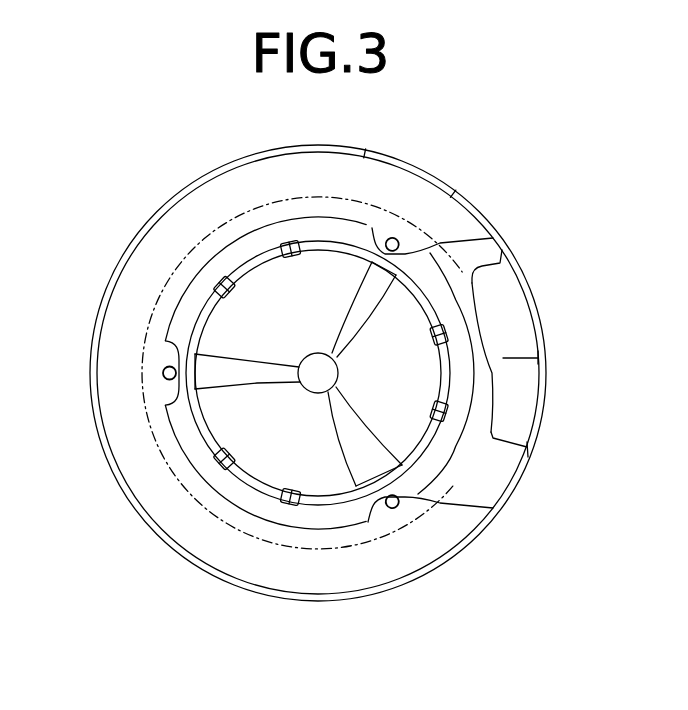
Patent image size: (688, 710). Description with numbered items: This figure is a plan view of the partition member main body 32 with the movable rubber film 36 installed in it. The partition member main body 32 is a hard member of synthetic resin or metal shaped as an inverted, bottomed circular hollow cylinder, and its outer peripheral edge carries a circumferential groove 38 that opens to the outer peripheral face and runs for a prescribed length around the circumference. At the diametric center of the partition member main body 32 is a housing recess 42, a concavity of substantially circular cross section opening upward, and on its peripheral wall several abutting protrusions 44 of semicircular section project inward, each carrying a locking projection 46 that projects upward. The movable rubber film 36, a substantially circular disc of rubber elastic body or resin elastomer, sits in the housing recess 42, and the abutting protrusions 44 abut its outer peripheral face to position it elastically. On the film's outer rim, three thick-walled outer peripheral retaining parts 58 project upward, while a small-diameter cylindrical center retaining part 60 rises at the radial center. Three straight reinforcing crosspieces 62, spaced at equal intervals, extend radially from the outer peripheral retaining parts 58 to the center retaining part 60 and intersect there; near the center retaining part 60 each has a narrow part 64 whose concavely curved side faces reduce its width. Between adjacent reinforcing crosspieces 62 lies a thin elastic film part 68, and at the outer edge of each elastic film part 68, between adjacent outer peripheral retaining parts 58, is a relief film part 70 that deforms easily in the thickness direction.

The partition member main body 32 is at (475, 490).
The movable rubber film 36 is at (208, 285).
The circumferential groove 38 is at (148, 323).
The housing recess 42 is at (257, 485).
The abutting protrusion 44 is at (405, 251).
The locking projection 46 is at (394, 242).
The outer peripheral retaining part 58 is at (433, 313).
The center retaining part 60 is at (311, 367).
The reinforcing crosspiece 62 is at (358, 303).
The narrow part 64 is at (338, 343).
The elastic film part 68 is at (300, 287).
The relief film part 70 is at (252, 262).